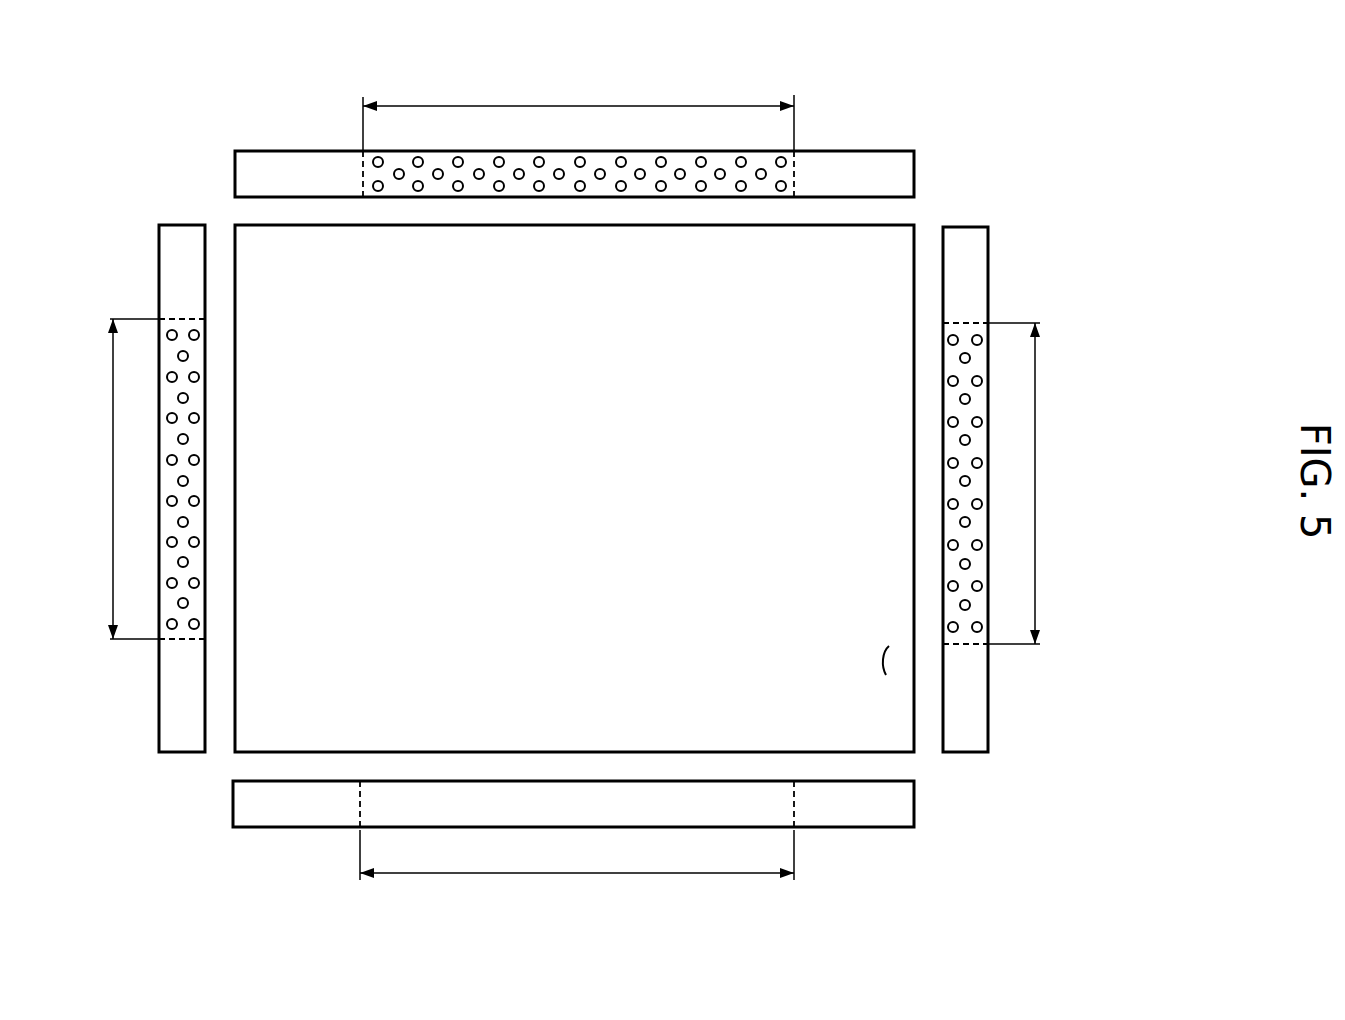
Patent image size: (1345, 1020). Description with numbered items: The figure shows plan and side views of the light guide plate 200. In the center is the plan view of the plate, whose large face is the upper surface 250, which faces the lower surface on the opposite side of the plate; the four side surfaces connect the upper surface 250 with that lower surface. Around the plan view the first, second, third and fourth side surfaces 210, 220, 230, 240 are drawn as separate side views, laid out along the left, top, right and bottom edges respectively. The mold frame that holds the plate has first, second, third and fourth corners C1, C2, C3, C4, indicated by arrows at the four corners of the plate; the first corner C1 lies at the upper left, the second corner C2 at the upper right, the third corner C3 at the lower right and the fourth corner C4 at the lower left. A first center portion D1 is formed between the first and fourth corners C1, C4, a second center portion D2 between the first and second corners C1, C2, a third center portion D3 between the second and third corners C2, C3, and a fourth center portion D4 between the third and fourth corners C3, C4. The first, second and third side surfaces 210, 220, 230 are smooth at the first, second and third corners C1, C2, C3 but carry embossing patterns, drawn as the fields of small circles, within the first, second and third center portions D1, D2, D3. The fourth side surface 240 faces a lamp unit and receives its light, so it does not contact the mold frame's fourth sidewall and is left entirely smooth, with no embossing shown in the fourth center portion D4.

The light guide plate 200 is at (541, 54).
The first side surface 210 is at (182, 224).
The second side surface 220 is at (285, 150).
The third side surface 230 is at (965, 226).
The fourth side surface 240 is at (282, 828).
The upper surface 250 is at (888, 662).
The first corner C1 is at (264, 250).
The second corner C2 is at (895, 249).
The third corner C3 is at (883, 726).
The fourth corner C4 is at (275, 717).
The first center portion D1 is at (123, 479).
The second center portion D2 is at (578, 115).
The third center portion D3 is at (1025, 483).
The fourth center portion D4 is at (577, 855).